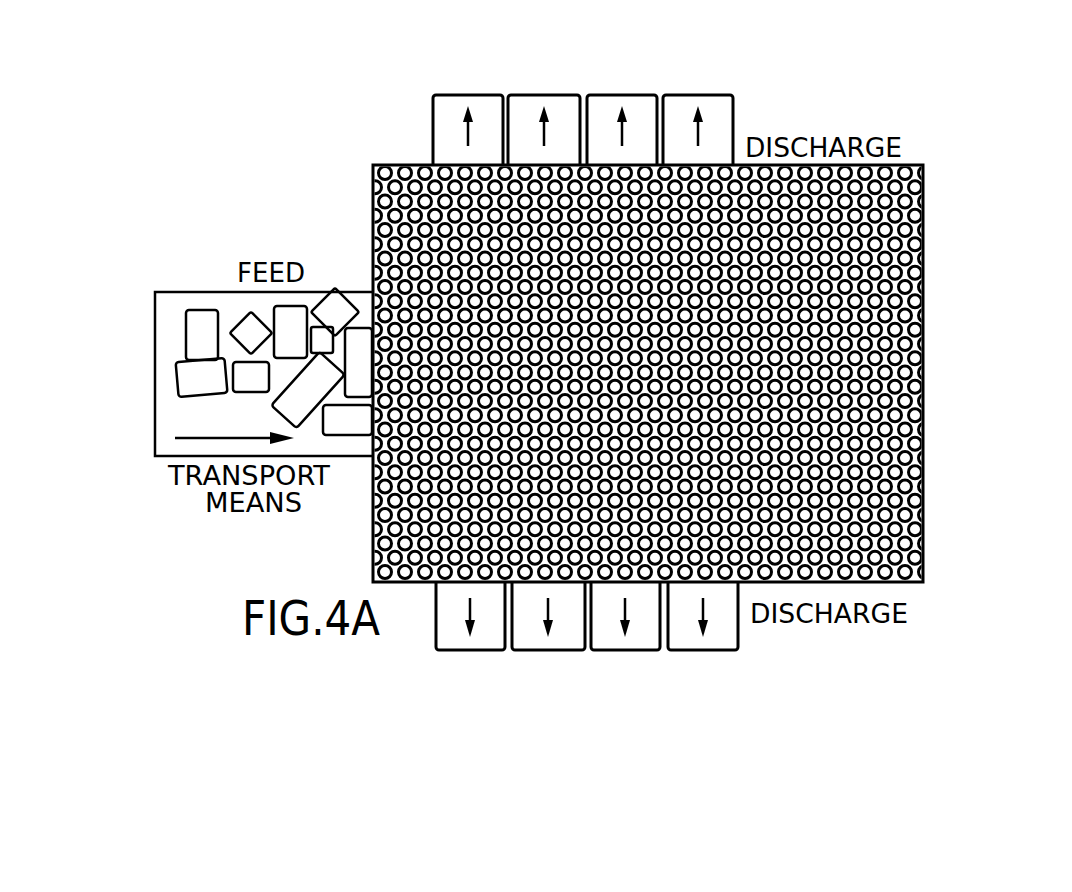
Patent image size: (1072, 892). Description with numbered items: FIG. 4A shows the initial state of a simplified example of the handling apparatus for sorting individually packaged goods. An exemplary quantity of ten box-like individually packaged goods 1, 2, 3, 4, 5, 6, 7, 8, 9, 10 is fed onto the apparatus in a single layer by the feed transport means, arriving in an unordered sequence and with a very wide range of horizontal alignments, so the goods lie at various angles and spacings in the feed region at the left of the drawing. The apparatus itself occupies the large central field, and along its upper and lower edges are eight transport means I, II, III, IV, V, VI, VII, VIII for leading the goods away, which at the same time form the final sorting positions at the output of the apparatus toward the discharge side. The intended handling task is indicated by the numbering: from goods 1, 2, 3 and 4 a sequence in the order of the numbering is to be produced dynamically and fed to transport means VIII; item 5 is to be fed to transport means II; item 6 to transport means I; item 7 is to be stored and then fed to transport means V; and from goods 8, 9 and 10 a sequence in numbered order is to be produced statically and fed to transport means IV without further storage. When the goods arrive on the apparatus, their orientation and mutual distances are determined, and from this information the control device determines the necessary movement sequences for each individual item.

The individually packaged good 1 is at (202, 377).
The individually packaged good 2 is at (290, 332).
The individually packaged good 3 is at (347, 420).
The individually packaged good 4 is at (322, 340).
The individually packaged good 5 is at (251, 377).
The individually packaged good 6 is at (358, 362).
The individually packaged good 7 is at (307, 390).
The individually packaged good 8 is at (251, 333).
The individually packaged good 9 is at (335, 312).
The individually packaged good 10 is at (202, 335).
The transport means I is at (469, 95).
The transport means II is at (540, 95).
The transport means III is at (620, 95).
The transport means IV is at (694, 95).
The transport means V is at (468, 651).
The transport means VI is at (543, 651).
The transport means VII is at (622, 651).
The transport means VIII is at (700, 651).